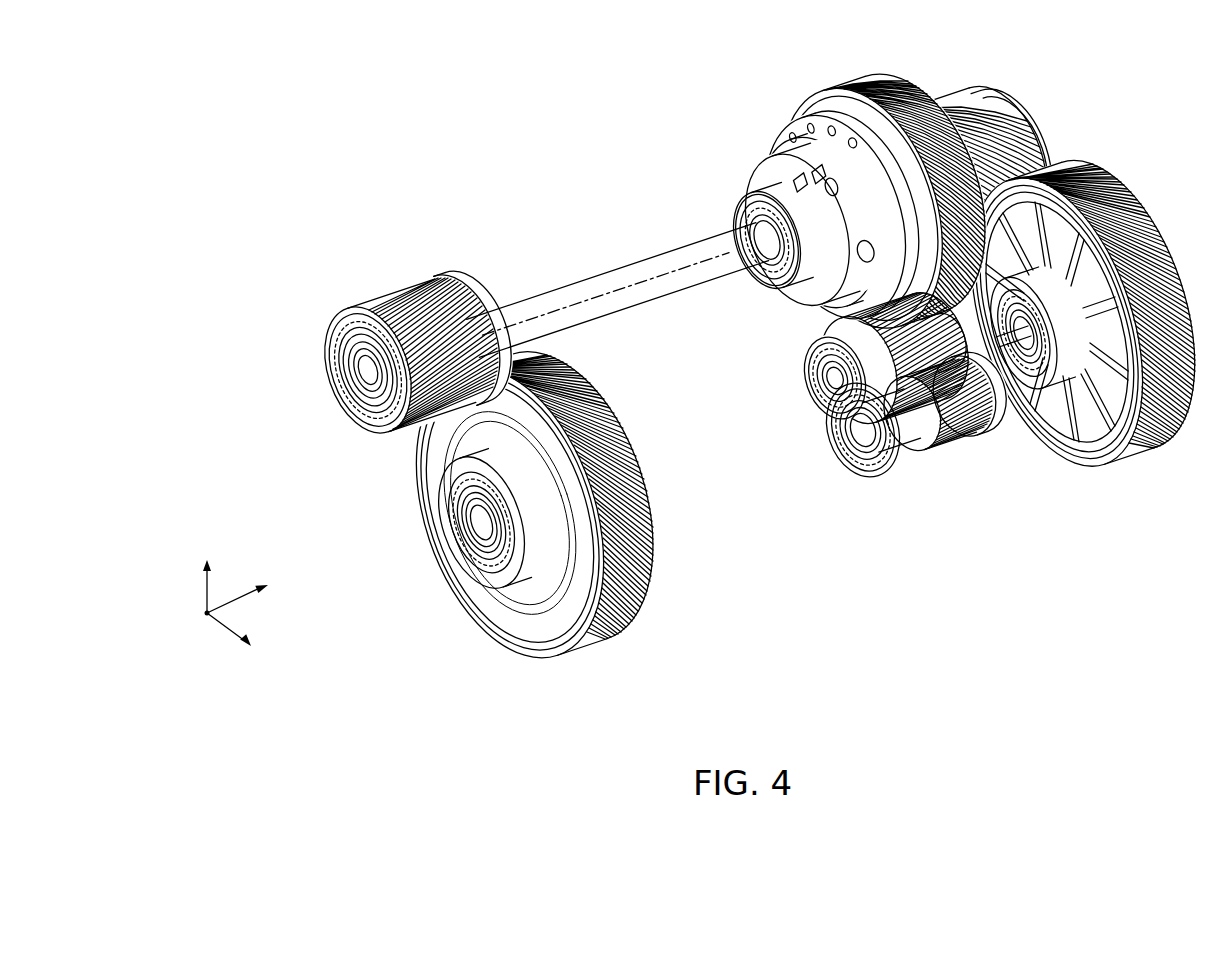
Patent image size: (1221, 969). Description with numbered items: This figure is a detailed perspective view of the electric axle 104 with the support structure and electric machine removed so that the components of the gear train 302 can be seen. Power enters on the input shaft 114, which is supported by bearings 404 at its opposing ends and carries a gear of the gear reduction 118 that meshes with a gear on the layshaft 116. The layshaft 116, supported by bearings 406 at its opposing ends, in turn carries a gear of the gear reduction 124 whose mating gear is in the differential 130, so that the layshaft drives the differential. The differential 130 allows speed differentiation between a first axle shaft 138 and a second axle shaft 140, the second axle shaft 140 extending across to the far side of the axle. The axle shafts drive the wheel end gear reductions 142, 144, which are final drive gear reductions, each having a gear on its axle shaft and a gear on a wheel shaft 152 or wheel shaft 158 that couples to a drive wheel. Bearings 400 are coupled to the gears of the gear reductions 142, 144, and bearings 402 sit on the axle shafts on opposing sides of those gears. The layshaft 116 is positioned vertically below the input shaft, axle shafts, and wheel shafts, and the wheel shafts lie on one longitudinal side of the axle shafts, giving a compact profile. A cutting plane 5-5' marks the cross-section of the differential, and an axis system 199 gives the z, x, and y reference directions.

The electric axle 104 is at (714, 366).
The differential 130 is at (908, 189).
The bearings 402 is at (1012, 102).
The cutting plane 5 is at (289, 360).
The cutting plane 5' is at (1051, 82).
The first axle shaft 138 is at (1035, 108).
The wheel end gear reduction 142 is at (1079, 307).
The second axle shaft 140 is at (615, 278).
The gear reduction 124 is at (848, 320).
The bearings 406 is at (808, 360).
The layshaft 116 is at (803, 378).
The input shaft 114 is at (842, 460).
The bearings 404 is at (886, 478).
The gear reduction 118 is at (942, 470).
The gear train 302 is at (874, 430).
The wheel shaft 152 is at (1023, 433).
The bearings 400 is at (1073, 470).
The wheel end gear reduction 144 is at (504, 504).
The wheel shaft 158 is at (470, 522).
The axis system 199 is at (236, 571).